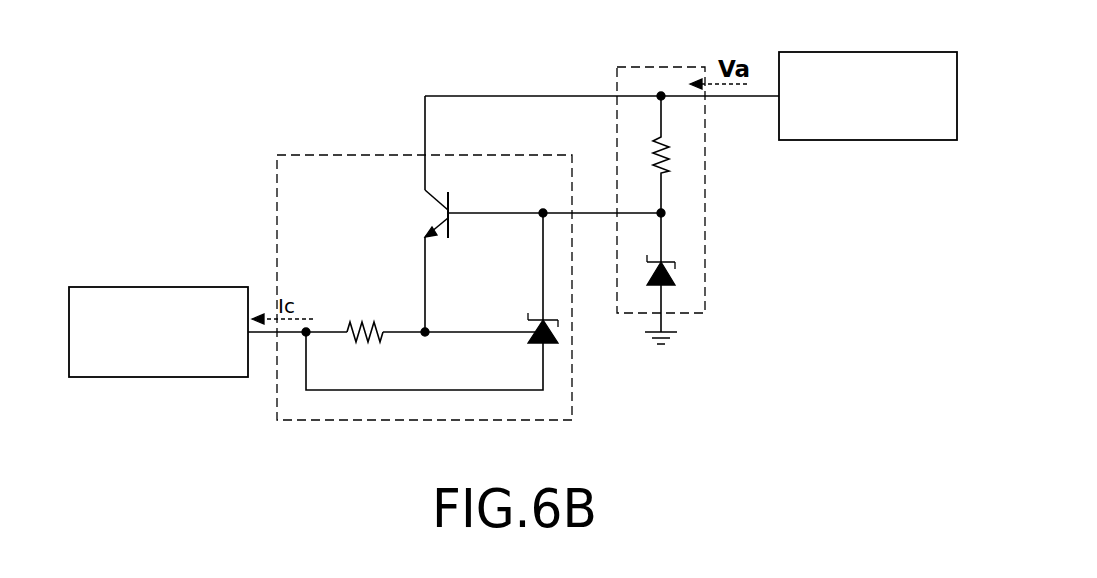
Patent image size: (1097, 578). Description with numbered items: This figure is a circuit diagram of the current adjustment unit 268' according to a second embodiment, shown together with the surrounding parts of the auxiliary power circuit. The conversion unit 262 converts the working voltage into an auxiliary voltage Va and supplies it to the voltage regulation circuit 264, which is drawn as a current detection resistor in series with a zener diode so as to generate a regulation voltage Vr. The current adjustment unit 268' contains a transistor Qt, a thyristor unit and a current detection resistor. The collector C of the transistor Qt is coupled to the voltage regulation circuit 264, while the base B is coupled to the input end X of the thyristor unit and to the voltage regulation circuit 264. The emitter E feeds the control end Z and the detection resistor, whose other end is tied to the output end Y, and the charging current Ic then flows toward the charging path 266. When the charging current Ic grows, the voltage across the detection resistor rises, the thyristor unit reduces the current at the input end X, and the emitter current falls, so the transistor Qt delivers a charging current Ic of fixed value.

The conversion unit 262 is at (868, 58).
The voltage regulation circuit 264 is at (662, 73).
The charging path 266 is at (158, 293).
The current adjustment unit 268' is at (431, 270).